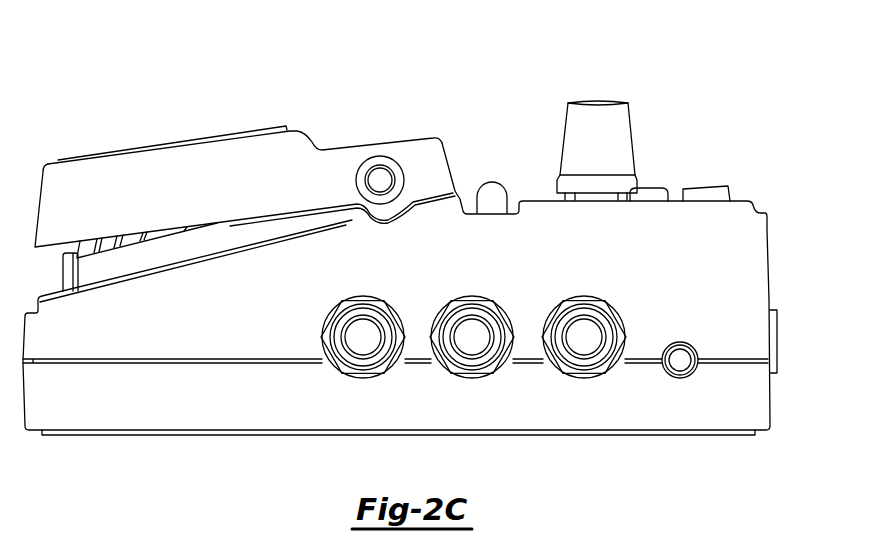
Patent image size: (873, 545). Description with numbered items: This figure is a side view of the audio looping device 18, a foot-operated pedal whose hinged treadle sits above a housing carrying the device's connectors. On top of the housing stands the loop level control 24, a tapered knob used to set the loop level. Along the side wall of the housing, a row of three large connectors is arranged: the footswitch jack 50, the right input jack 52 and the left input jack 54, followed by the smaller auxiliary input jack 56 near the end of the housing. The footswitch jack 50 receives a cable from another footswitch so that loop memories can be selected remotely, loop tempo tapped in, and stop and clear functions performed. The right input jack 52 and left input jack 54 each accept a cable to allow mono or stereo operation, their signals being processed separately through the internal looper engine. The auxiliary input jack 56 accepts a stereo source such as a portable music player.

The audio looping device 18 is at (732, 54).
The loop level control 24 is at (598, 98).
The footswitch jack 50 is at (362, 296).
The right input jack 52 is at (472, 296).
The left input jack 54 is at (584, 296).
The auxiliary input jack 56 is at (681, 342).